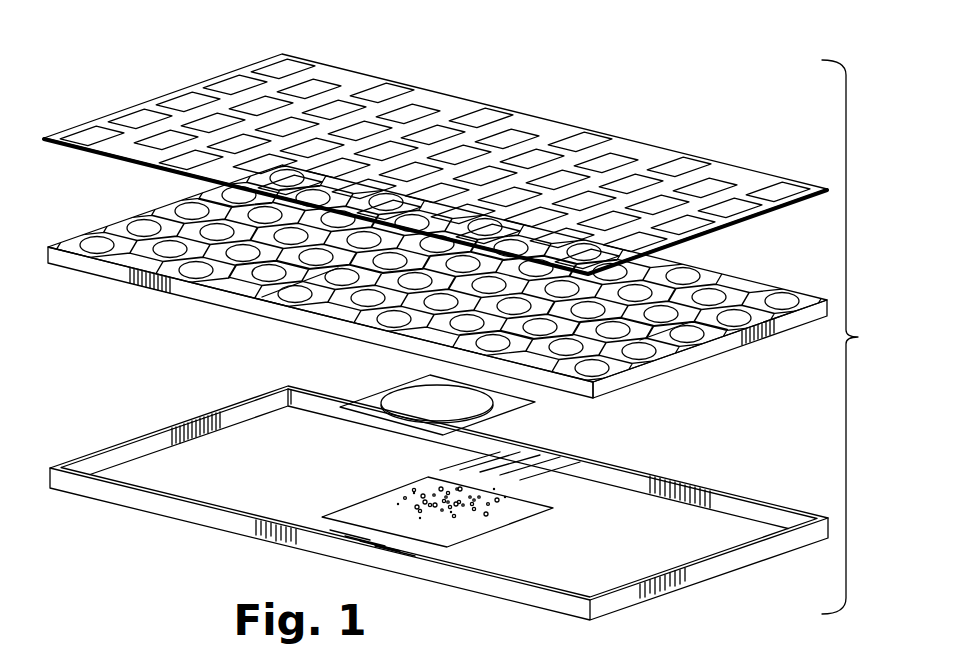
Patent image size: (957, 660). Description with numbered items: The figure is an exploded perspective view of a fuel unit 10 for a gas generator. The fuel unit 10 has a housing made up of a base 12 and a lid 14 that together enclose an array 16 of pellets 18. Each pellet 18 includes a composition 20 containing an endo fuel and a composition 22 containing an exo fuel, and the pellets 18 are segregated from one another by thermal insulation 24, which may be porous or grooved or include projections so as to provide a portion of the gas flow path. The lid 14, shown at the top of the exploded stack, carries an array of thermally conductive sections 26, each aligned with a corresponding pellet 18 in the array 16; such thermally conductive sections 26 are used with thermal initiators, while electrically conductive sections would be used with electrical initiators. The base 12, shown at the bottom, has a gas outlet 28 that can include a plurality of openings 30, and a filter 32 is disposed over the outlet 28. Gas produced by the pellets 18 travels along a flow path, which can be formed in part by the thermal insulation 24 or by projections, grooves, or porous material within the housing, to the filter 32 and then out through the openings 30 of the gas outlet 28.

The fuel unit 10 is at (863, 337).
The base 12 is at (143, 532).
The lid 14 is at (156, 88).
The array 16 is at (96, 212).
The pellet 18 is at (158, 292).
The composition containing an endo fuel 20 is at (732, 297).
The composition containing an exo fuel 22 is at (687, 277).
The thermal insulation 24 is at (300, 307).
The thermally conductive section 26 is at (317, 92).
The gas outlet 28 is at (522, 519).
The openings 30 is at (445, 520).
The filter 32 is at (508, 415).